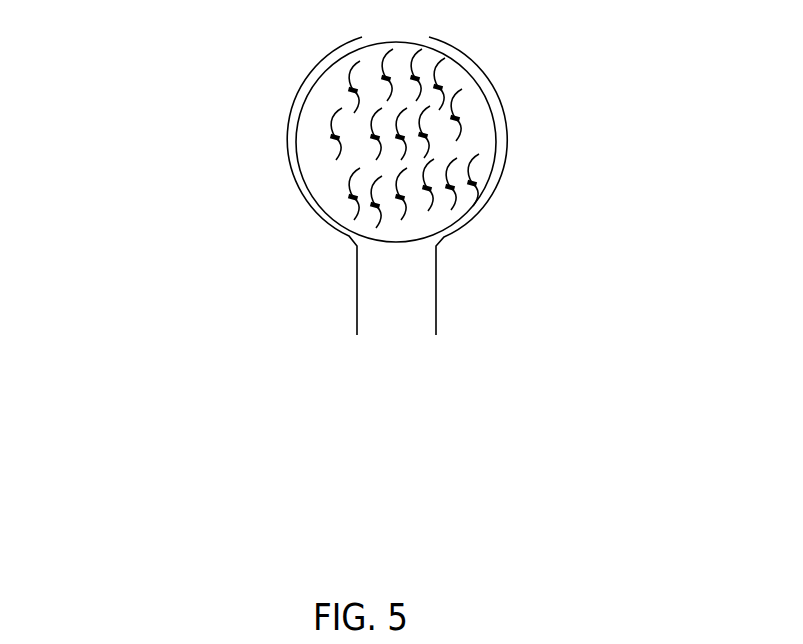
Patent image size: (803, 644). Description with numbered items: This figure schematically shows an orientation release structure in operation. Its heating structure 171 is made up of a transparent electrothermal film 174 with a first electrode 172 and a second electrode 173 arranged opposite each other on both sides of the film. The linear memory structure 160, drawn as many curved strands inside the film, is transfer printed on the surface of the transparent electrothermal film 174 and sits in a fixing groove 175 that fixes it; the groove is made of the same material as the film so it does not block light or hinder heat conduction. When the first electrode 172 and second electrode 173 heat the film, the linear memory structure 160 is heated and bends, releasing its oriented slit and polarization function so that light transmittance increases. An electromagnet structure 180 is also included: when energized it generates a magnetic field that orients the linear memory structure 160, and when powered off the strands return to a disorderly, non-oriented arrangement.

The linear memory structure 160 is at (433, 76).
The heating structure 171 is at (156, 408).
The first electrode 172 is at (357, 268).
The second electrode 173 is at (437, 250).
The transparent electrothermal film 174 is at (477, 128).
The fixing groove 175 is at (355, 88).
The electromagnet structure 180 is at (400, 186).